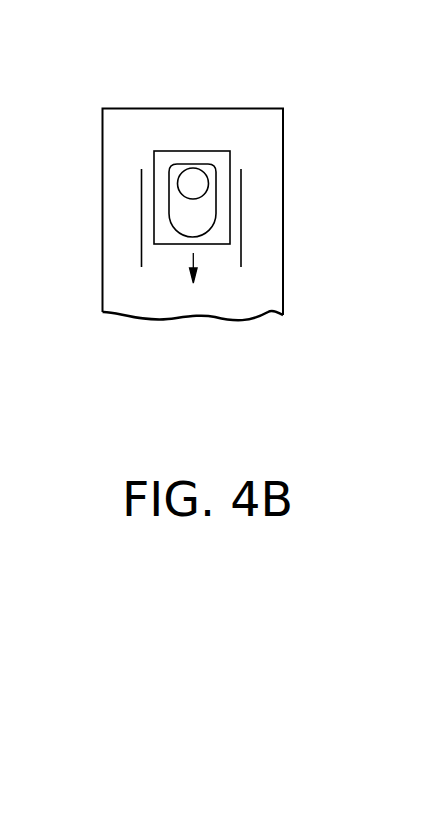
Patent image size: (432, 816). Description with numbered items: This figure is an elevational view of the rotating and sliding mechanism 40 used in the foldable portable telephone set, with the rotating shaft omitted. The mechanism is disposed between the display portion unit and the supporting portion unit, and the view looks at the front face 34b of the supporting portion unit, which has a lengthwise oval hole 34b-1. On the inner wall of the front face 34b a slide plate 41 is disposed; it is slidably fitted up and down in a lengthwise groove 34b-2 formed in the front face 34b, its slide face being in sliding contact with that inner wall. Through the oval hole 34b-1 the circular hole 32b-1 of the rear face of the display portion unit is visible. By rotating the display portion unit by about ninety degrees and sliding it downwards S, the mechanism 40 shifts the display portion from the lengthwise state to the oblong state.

The rotating and sliding mechanism 40 is at (203, 260).
The front face 34b is at (268, 166).
The lengthwise oval hole 34b-1 is at (205, 215).
The lengthwise groove 34b-2 is at (153, 256).
The slide plate 41 is at (181, 157).
The circular hole 32b-1 is at (193, 179).
The sliding downwards S is at (197, 263).